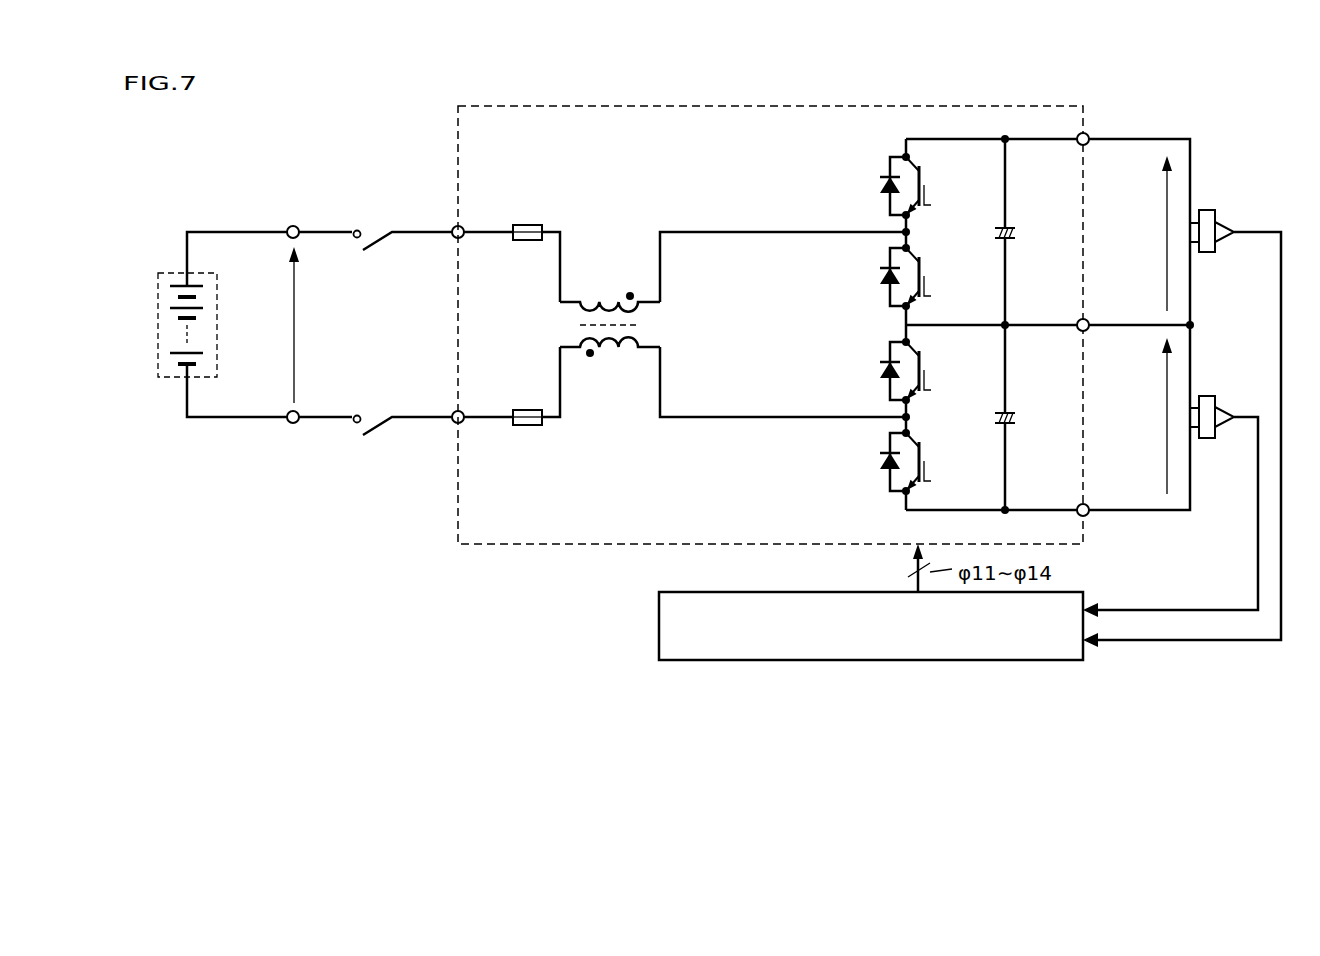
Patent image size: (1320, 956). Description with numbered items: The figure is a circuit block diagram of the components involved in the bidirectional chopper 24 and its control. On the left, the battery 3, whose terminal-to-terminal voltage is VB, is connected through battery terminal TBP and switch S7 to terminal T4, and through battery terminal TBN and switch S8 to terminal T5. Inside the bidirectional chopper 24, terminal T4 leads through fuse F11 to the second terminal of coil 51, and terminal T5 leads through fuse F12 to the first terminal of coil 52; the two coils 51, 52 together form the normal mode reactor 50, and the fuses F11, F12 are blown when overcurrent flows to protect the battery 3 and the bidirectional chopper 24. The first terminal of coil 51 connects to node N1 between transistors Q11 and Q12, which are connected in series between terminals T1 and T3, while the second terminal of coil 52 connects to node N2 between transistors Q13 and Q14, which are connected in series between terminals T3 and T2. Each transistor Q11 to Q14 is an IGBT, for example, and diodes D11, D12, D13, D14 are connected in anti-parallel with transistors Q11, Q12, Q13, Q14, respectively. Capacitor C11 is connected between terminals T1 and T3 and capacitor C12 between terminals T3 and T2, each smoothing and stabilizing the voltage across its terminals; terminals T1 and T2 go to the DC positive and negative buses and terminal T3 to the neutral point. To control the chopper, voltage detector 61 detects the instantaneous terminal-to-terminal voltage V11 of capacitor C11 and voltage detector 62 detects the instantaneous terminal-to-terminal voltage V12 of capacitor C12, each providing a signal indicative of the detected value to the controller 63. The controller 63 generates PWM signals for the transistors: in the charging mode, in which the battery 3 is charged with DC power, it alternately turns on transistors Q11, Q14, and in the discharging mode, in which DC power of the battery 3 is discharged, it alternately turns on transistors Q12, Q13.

The battery 3 is at (171, 272).
The bidirectional chopper 24 is at (457, 124).
The normal mode reactor 50 is at (570, 324).
The coil 51 is at (578, 311).
The coil 52 is at (578, 342).
The voltage detector 61 is at (1216, 214).
The voltage detector 62 is at (1216, 399).
The controller 63 is at (658, 627).
The battery terminal TBP is at (293, 226).
The battery terminal TBN is at (293, 424).
The terminal T1 is at (1089, 132).
The terminal T2 is at (1089, 503).
The terminal T3 is at (1089, 318).
The terminal T4 is at (455, 226).
The terminal T5 is at (455, 411).
The switch S7 is at (377, 249).
The switch S8 is at (377, 434).
The fuse F11 is at (528, 225).
The fuse F12 is at (528, 428).
The transistor Q11 is at (926, 190).
The transistor Q12 is at (926, 281).
The transistor Q13 is at (926, 375).
The transistor Q14 is at (926, 466).
The diode D11 is at (879, 186).
The diode D12 is at (879, 277).
The diode D13 is at (879, 371).
The diode D14 is at (879, 462).
The capacitor C11 is at (1009, 226).
The capacitor C12 is at (1009, 410).
The node N1 is at (912, 234).
The node N2 is at (912, 419).
The terminal-to-terminal voltage V11 is at (1146, 233).
The terminal-to-terminal voltage V12 is at (1146, 416).
The terminal-to-terminal voltage of battery VB is at (278, 325).